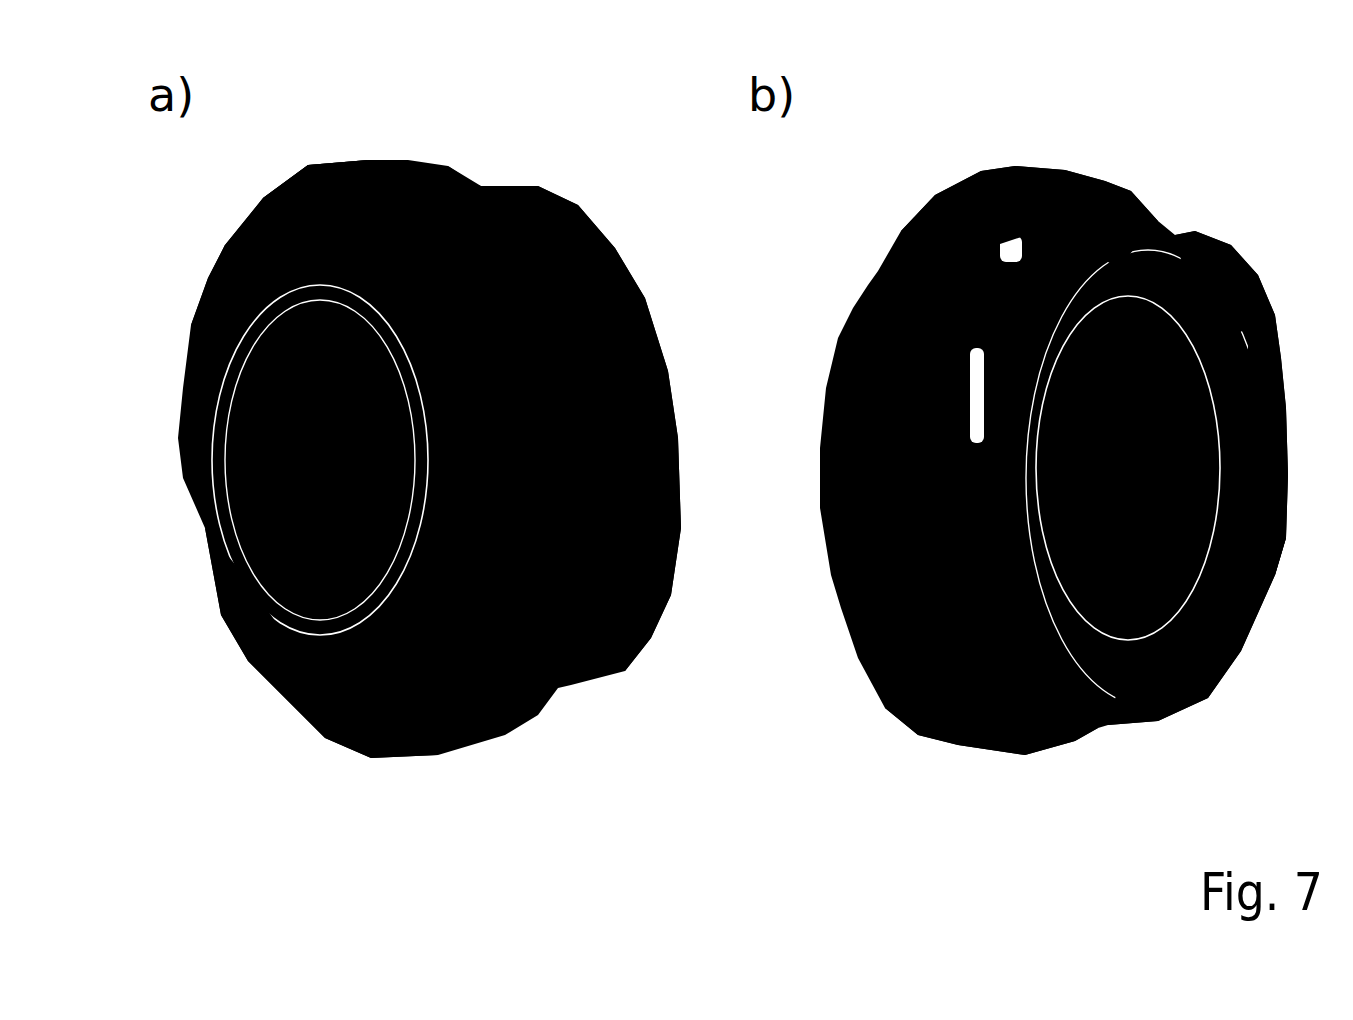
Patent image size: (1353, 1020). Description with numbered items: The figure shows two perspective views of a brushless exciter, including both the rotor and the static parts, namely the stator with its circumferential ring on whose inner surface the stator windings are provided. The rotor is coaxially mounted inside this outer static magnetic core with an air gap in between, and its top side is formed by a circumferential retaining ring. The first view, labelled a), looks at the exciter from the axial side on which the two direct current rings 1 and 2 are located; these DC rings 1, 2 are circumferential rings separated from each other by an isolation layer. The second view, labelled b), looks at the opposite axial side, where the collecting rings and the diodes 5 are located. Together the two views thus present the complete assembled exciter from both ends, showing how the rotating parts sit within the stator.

The direct current ring 1 is at (197, 280).
The direct current ring 2 is at (219, 285).
The diodes 5 is at (1278, 405).